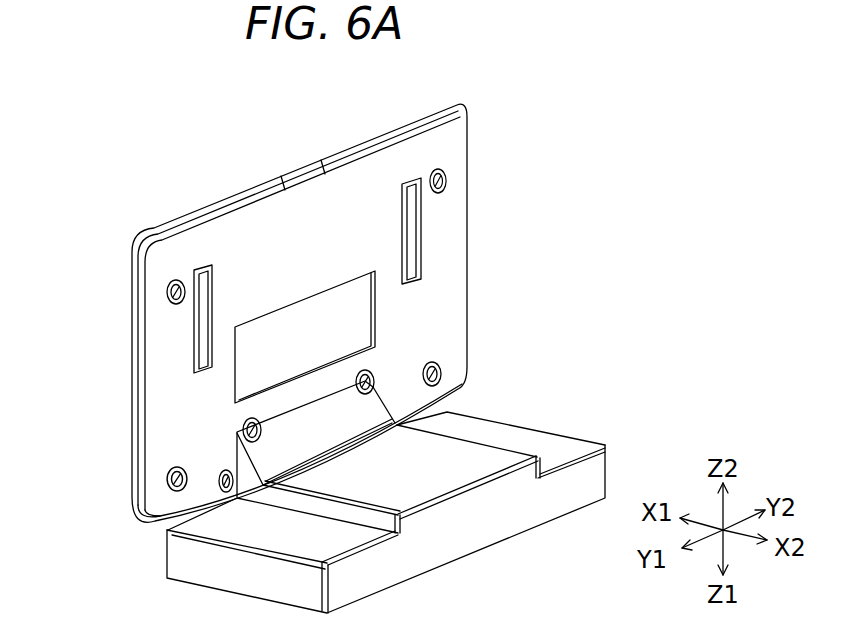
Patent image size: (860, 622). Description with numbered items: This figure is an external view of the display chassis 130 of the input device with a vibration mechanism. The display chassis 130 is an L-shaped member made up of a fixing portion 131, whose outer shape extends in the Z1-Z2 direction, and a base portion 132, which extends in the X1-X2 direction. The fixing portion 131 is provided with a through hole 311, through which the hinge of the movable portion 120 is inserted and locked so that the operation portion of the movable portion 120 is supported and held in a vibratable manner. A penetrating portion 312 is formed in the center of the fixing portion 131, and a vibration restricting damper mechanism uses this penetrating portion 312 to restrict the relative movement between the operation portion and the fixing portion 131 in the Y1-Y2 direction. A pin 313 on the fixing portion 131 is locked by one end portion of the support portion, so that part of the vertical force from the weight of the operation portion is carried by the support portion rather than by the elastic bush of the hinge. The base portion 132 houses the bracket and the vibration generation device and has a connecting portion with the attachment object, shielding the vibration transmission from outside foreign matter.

The movable portion 120 is at (131, 258).
The display chassis 130 is at (430, 429).
The fixing portion 131 is at (453, 283).
The base portion 132 is at (533, 441).
The through hole 311 is at (447, 181).
The penetrating portion 312 is at (334, 320).
The pin 313 is at (194, 274).